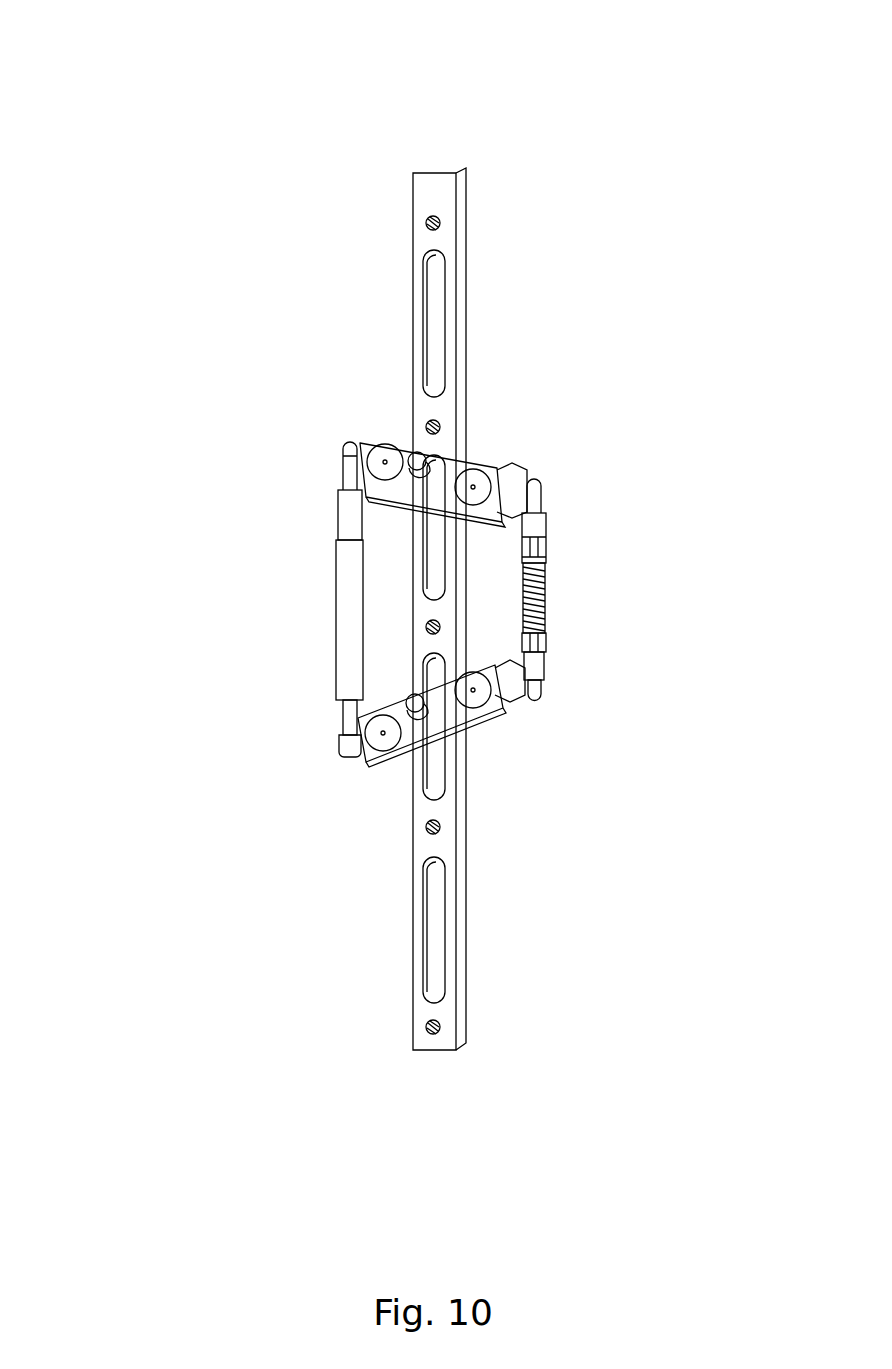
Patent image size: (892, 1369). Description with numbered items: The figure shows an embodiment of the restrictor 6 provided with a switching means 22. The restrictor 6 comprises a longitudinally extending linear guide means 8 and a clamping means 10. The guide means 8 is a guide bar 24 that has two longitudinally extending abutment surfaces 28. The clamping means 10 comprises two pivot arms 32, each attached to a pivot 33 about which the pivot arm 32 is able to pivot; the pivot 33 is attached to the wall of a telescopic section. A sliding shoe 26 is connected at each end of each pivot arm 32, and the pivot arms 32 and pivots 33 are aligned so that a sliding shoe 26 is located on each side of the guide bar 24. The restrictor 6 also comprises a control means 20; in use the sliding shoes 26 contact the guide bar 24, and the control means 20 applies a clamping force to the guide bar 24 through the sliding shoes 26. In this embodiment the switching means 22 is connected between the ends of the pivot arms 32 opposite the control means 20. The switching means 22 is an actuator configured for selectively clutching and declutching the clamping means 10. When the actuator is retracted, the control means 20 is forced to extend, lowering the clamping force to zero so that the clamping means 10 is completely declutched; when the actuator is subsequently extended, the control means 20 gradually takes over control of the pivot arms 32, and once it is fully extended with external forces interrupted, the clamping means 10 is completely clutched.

The restrictor 6 is at (224, 283).
The linear guide means 8 is at (495, 133).
The clamping means 10 is at (575, 567).
The control means 20 is at (528, 625).
The switching means 22 is at (347, 605).
The guide bar 24 is at (440, 343).
The sliding shoe 26 is at (357, 487).
The abutment surface 28 is at (403, 246).
The pivot arm 32 is at (455, 465).
The pivot 33 is at (418, 458).